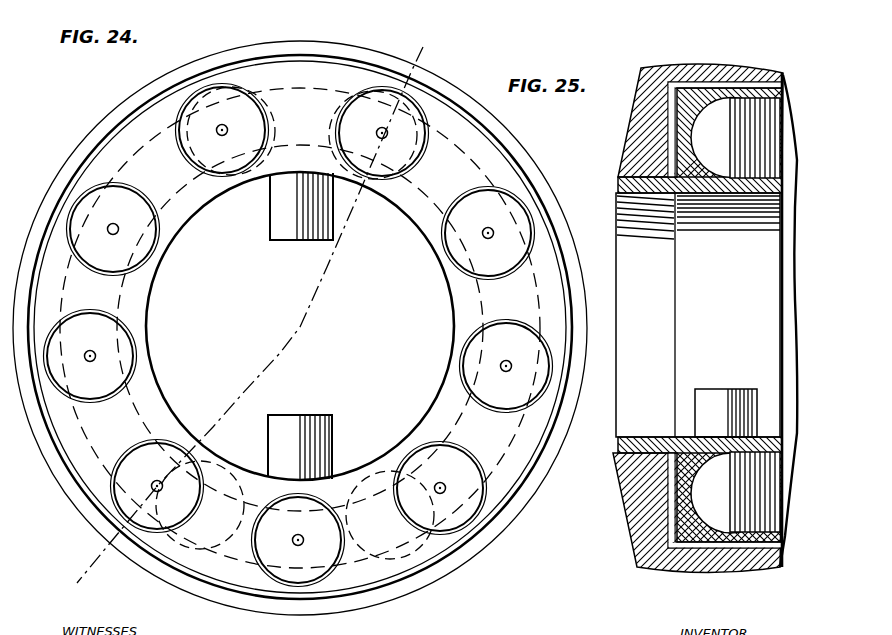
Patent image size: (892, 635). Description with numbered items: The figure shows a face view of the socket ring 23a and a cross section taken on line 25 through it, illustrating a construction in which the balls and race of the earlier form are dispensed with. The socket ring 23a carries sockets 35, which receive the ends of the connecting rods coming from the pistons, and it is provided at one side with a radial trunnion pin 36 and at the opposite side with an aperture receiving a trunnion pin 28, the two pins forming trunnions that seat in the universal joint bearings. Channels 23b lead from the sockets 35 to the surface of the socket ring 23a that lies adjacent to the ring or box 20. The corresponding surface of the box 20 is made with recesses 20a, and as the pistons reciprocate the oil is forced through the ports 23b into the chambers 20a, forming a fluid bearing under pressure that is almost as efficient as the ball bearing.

In FIG. 24, the ring or box 20 is at (465, 554).
In FIG. 25, the ring or box 20 is at (638, 551).
In FIG. 24, the recesses 20a is at (140, 413).
In FIG. 25, the recesses 20a is at (597, 511).
In FIG. 24, the socket ring 23a is at (452, 292).
In FIG. 25, the socket ring 23a is at (699, 315).
In FIG. 24, the channels 23b is at (440, 487).
In FIG. 25, the channels 23b is at (731, 316).
In FIG. 24, the section line 25— 25 is at (251, 319).
In FIG. 24, the trunnion pin 28 is at (275, 220).
In FIG. 24, the sockets 35 is at (277, 517).
In FIG. 25, the sockets 35 is at (750, 108).
In FIG. 24, the radial trunnion pin 36 is at (300, 447).
In FIG. 25, the radial trunnion pin 36 is at (726, 413).